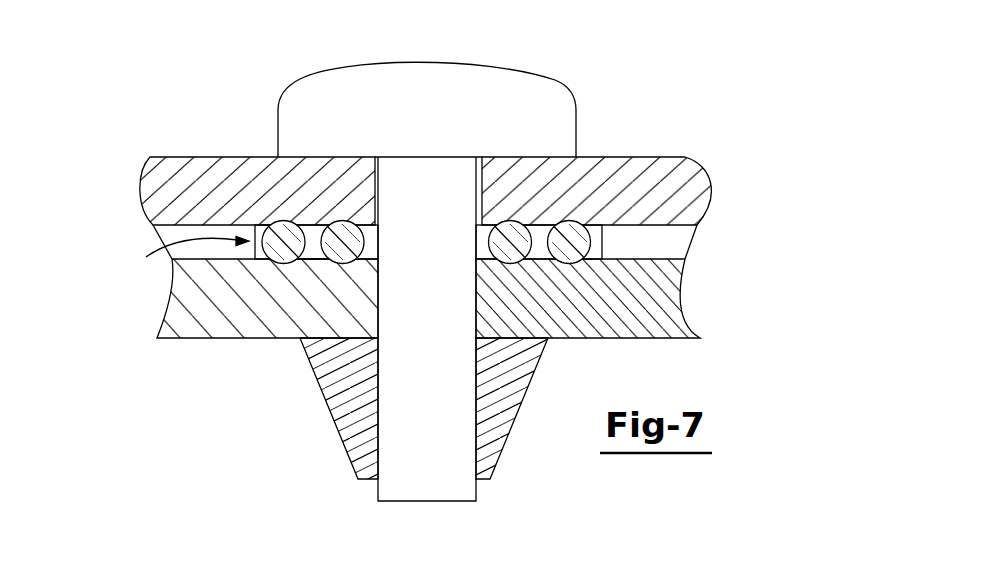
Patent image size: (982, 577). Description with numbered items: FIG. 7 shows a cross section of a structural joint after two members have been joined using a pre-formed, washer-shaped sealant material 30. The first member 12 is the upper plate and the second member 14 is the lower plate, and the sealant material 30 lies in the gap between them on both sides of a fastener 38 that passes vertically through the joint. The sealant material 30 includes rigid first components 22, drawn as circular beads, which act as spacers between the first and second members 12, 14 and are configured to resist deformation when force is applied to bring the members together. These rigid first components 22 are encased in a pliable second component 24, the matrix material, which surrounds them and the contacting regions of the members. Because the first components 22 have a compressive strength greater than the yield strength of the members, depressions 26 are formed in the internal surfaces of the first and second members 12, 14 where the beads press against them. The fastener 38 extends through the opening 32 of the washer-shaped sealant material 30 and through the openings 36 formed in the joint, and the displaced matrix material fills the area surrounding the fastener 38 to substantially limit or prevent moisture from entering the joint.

The first member 12 is at (636, 167).
The second member 14 is at (680, 311).
The first component 22 is at (342, 221).
The second component 24 is at (313, 252).
The depression 26 is at (271, 208).
The sealant material 30 is at (186, 256).
The opening 32 is at (378, 240).
The opening 36 is at (476, 157).
The fastener 38 is at (513, 96).